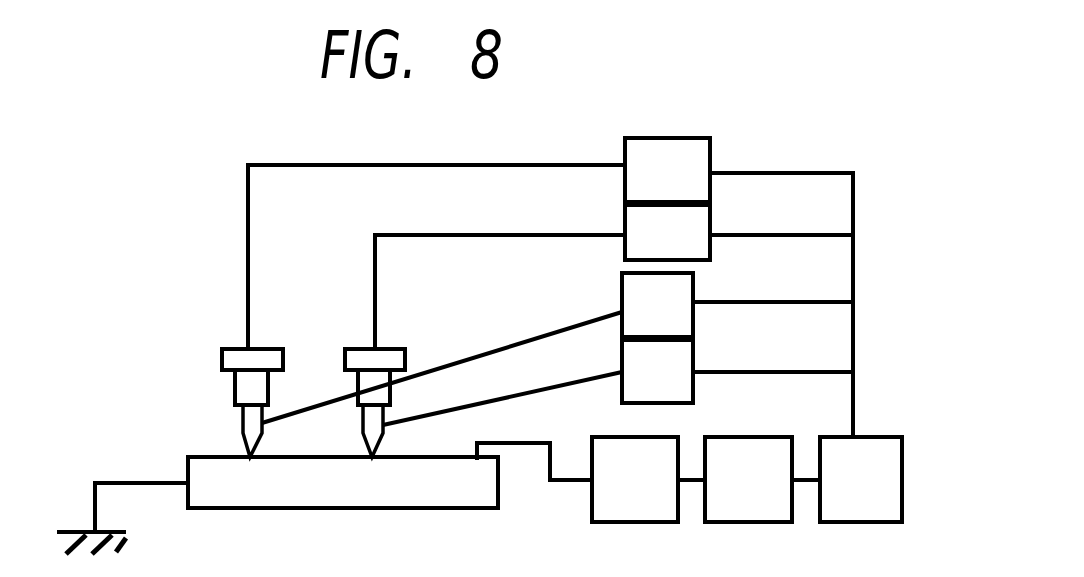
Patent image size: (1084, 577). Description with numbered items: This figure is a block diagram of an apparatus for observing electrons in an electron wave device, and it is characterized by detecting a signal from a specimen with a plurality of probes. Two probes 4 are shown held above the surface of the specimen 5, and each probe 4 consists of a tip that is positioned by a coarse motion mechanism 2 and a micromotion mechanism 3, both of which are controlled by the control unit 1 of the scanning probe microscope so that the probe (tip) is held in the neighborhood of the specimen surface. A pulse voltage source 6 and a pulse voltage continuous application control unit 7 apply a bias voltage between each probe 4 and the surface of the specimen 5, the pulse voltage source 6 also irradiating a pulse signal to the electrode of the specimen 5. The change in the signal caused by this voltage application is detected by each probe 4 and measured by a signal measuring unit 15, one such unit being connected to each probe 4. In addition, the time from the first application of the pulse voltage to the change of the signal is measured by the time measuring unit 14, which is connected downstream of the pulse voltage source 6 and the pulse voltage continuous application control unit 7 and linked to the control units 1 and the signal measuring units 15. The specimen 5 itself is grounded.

The control unit 1 is at (667, 199).
The coarse motion mechanism 2 is at (222, 348).
The micromotion mechanism 3 is at (235, 388).
The probe 4 is at (243, 410).
The specimen 5 is at (252, 490).
The pulse voltage source 6 is at (635, 479).
The pulse voltage continuous application control unit 7 is at (748, 479).
The time measuring unit 14 is at (861, 479).
The signal measuring unit 15 is at (657, 338).